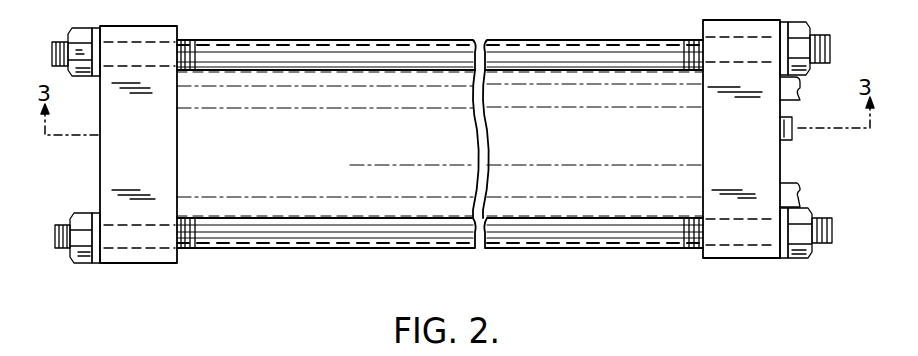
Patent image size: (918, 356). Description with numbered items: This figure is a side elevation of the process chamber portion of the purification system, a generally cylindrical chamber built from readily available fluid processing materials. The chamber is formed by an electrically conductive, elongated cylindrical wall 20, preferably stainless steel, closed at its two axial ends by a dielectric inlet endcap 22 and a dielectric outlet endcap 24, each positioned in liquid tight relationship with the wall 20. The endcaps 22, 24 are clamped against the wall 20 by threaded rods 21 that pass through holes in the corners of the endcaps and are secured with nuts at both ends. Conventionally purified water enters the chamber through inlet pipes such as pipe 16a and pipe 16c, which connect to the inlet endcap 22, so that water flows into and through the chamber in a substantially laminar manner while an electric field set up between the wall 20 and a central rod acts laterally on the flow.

The cylindrical wall 20 is at (415, 160).
The threaded rods 21 is at (617, 52).
The inlet endcap 22 is at (754, 249).
The outlet endcap 24 is at (121, 26).
The pipe 16a is at (800, 100).
The pipe 16c is at (800, 190).